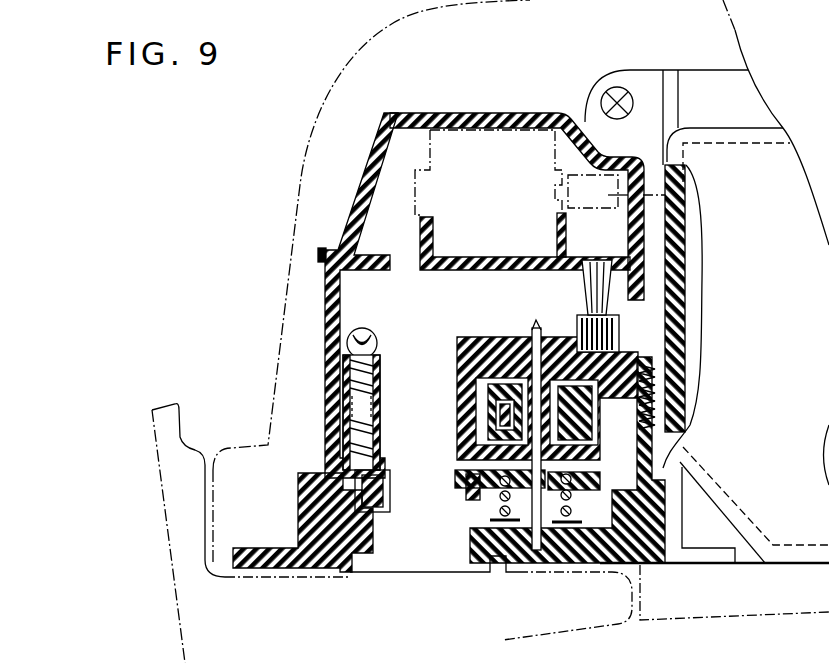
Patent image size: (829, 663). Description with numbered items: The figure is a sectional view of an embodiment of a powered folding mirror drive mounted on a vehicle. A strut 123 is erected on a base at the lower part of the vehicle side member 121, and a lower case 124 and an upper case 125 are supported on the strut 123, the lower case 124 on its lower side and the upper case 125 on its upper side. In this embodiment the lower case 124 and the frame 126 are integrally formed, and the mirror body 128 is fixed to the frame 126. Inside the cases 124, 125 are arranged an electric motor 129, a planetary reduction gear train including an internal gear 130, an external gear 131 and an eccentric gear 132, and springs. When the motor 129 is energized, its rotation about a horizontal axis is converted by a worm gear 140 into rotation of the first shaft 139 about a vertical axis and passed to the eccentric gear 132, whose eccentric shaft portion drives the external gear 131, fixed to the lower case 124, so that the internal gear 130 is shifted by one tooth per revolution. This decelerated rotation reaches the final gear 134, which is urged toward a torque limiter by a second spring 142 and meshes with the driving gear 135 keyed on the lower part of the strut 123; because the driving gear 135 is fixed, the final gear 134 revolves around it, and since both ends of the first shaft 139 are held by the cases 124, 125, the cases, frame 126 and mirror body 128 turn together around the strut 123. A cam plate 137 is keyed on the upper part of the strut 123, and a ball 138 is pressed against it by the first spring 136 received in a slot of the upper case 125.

The vehicle side member 121 is at (155, 440).
The strut 123 is at (442, 540).
The lower case 124 is at (322, 553).
The upper case 125 is at (325, 380).
The frame 126 is at (758, 128).
The mirror body 128 is at (588, 0).
The electric motor 129 is at (495, 145).
The internal gear 130 is at (476, 432).
The external gear 131 is at (478, 394).
The eccentric gear 132 is at (560, 337).
The final gear 134 is at (593, 487).
The driving gear 135 is at (375, 495).
The first spring 136 is at (340, 432).
The cam plate 137 is at (322, 298).
The ball 138 is at (368, 330).
The first shaft 139 is at (532, 325).
The worm gear 140 is at (684, 180).
The second spring 142 is at (466, 485).